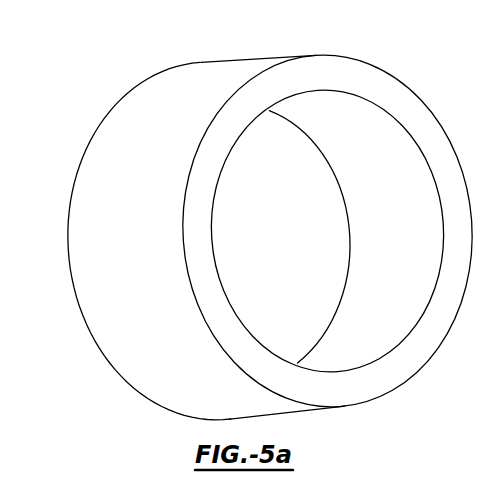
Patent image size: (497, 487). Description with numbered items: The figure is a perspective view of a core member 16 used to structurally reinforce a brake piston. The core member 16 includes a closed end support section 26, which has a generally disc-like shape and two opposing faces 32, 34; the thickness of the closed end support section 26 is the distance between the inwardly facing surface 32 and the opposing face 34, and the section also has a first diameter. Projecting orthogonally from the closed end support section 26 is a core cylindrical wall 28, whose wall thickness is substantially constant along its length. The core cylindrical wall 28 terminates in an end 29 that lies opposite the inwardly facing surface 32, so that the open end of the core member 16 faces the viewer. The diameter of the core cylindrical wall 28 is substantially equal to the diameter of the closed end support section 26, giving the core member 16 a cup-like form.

The core member 16 is at (99, 74).
The closed end support section 26 is at (318, 234).
The core cylindrical wall 28 is at (207, 66).
The end 29 is at (390, 98).
The inwardly facing surface 32 is at (287, 152).
The opposing face 34 is at (75, 190).